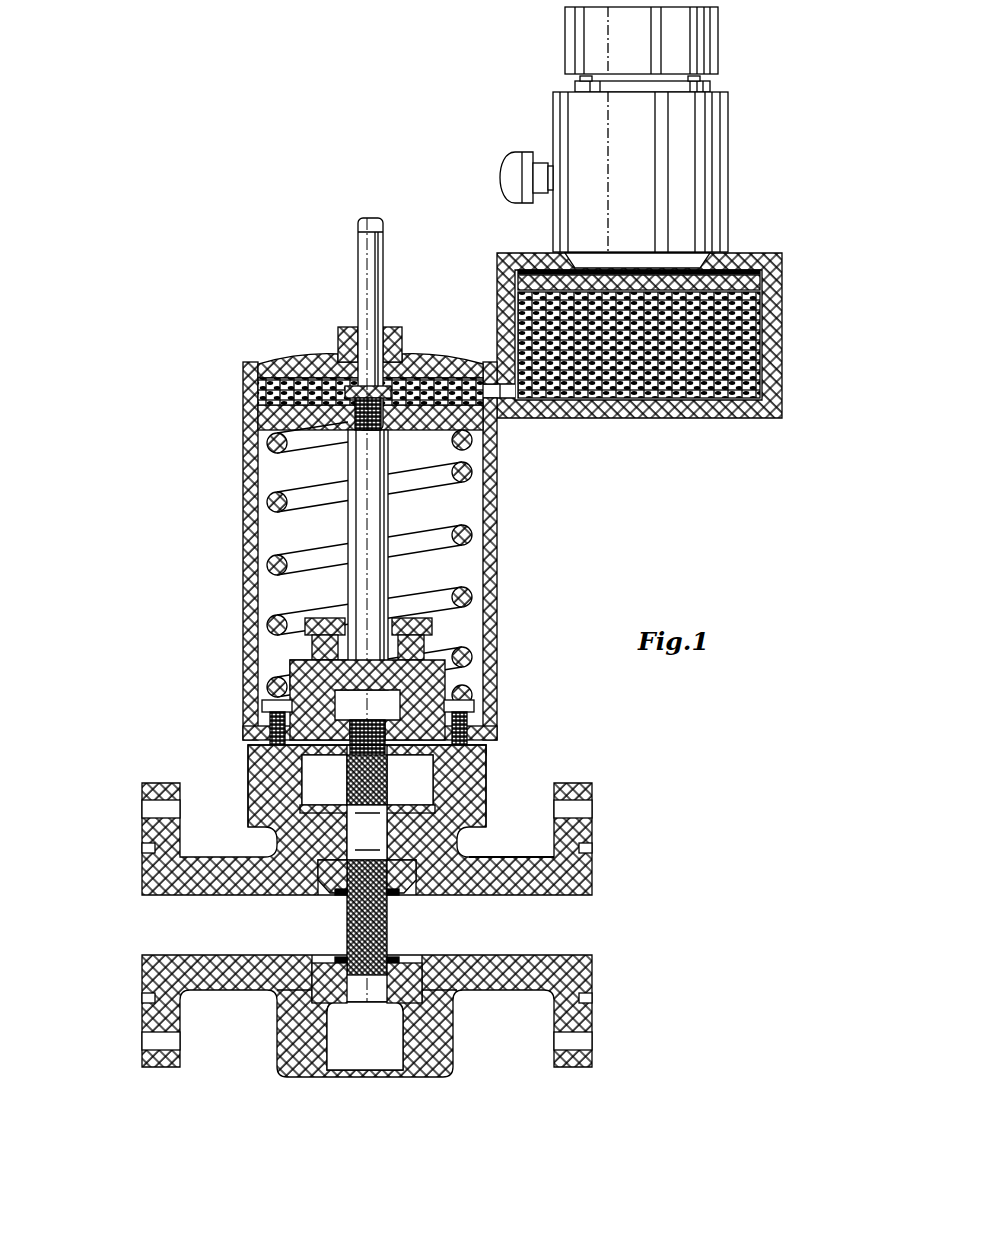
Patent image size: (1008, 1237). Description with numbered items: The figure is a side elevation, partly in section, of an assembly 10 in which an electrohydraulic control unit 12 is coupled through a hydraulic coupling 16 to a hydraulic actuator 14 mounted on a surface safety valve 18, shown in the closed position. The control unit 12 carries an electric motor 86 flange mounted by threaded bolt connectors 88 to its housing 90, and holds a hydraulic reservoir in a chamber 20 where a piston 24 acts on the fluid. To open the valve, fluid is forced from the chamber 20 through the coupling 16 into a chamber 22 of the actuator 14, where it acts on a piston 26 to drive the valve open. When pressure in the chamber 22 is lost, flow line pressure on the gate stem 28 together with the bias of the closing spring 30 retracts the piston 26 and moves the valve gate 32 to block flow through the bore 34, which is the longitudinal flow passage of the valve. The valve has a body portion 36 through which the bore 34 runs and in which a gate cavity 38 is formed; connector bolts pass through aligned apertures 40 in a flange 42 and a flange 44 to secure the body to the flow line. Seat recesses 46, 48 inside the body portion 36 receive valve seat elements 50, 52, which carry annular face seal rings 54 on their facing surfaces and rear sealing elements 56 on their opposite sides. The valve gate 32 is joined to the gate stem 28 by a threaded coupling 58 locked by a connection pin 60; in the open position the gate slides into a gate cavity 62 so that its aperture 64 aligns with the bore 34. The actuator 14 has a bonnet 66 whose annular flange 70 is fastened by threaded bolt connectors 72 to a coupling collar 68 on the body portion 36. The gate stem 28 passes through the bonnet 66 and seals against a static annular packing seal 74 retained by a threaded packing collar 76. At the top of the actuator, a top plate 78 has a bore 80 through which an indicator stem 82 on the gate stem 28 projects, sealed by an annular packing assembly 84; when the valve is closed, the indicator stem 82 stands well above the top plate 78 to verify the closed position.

The electrohydraulic control unit coupled to a hydraulic actuator of a surface safet 10 is at (265, 189).
The electrohydraulic control unit 12 is at (748, 149).
The hydraulic actuator 14 is at (540, 572).
The hydraulic coupling 16 is at (500, 400).
The surface safety valve 18 is at (592, 765).
The chamber 20 is at (782, 356).
The chamber 22 is at (250, 398).
The piston 24 is at (762, 283).
The piston 26 is at (428, 400).
The gate stem 28 is at (390, 505).
The closing spring 30 is at (265, 505).
The valve gate 32 is at (388, 906).
The bore 34 is at (592, 896).
The body portion 36 is at (515, 858).
The gate cavity 38 is at (480, 768).
The apertures 40 is at (160, 806).
The flange 42 is at (592, 831).
The flange 44 is at (142, 836).
The seat recess 46 is at (412, 885).
The seat recess 48 is at (325, 884).
The valve seat element 50 is at (400, 963).
The valve seat element 52 is at (336, 963).
The annular face seal rings 54 is at (340, 893).
The rear sealing elements 56 is at (295, 1012).
The threaded coupling 58 is at (324, 780).
The connection pin 60 is at (392, 758).
The gate cavity 62 is at (345, 1062).
The aperture 64 is at (335, 812).
The bonnet 66 is at (445, 670).
The coupling collar 68 is at (470, 762).
The annular flange 70 is at (487, 733).
The threaded bolt connectors 72 is at (470, 711).
The static annular packing seal 74 is at (300, 657).
The threaded packing collar 76 is at (432, 628).
The top plate 78 is at (292, 360).
The bore 80 is at (372, 328).
The indicator stem 82 is at (360, 249).
The annular packing assembly 84 is at (345, 340).
The electric motor 86 is at (720, 44).
The threaded bolt connectors 88 is at (705, 88).
The housing 90 is at (728, 206).